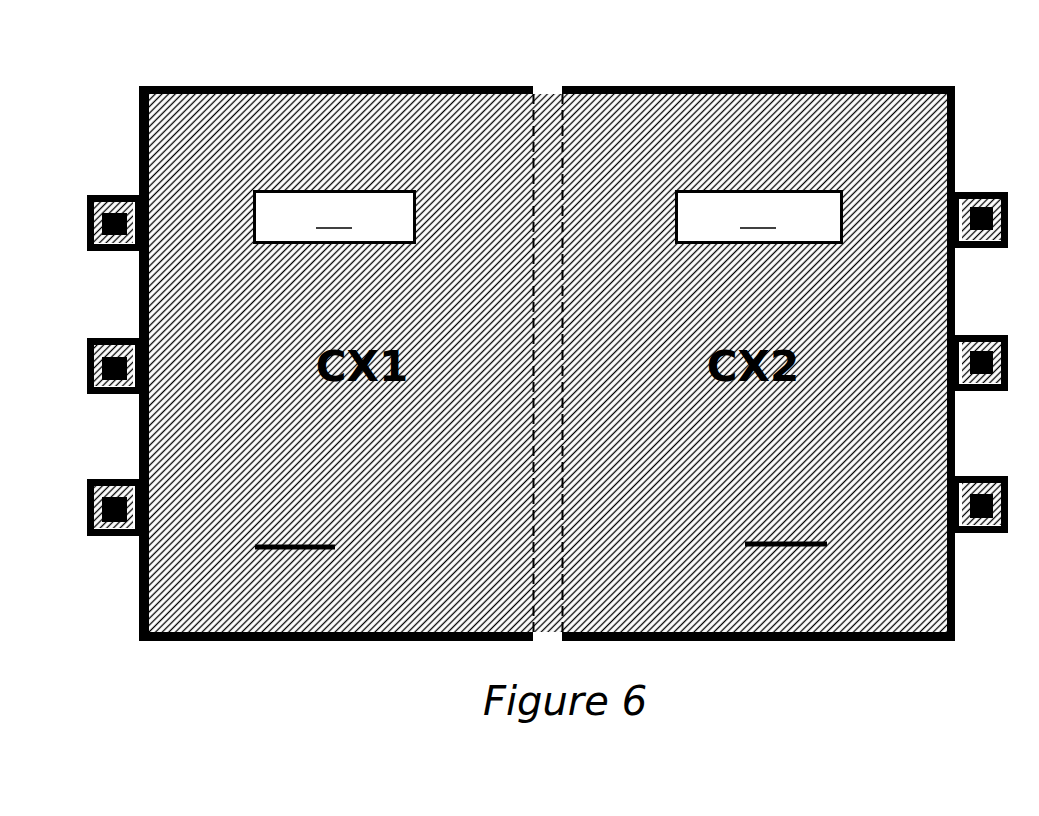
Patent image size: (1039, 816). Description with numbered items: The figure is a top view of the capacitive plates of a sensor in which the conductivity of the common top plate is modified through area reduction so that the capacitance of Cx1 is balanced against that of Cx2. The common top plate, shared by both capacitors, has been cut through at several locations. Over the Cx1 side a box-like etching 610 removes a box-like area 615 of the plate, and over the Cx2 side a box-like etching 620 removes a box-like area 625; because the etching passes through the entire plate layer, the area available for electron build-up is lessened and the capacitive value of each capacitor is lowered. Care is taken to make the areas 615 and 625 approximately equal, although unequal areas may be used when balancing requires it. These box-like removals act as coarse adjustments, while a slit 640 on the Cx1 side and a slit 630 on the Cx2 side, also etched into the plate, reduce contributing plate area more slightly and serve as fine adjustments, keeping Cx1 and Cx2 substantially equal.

The box-like etching 610 is at (335, 149).
The box-like area 615 is at (334, 217).
The box-like etching 620 is at (755, 149).
The box-like area 625 is at (758, 217).
The slit 630 is at (787, 548).
The slit 640 is at (297, 549).